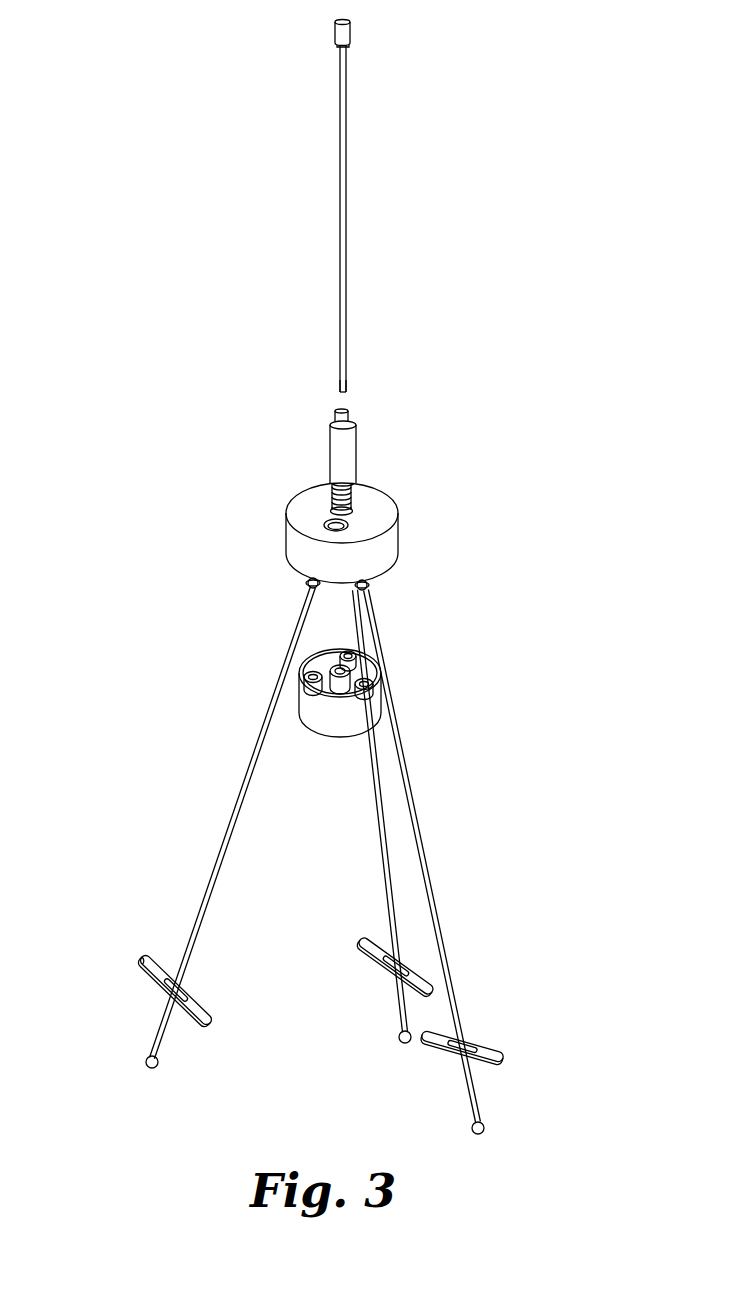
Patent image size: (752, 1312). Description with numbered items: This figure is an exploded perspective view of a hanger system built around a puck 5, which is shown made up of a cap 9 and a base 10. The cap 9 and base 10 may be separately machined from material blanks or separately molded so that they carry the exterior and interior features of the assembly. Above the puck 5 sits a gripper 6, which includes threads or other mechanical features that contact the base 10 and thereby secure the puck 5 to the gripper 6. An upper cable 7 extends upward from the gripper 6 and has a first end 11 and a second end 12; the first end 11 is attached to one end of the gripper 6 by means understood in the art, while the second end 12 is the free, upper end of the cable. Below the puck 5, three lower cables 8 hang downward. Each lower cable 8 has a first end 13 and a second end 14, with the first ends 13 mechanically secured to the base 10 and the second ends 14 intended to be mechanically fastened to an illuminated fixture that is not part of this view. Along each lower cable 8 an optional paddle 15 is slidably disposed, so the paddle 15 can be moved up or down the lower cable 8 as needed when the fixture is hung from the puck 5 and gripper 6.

The puck 5 is at (400, 530).
The gripper 6 is at (338, 445).
The upper cable 7 is at (346, 168).
The lower cable 8 is at (222, 848).
The cap 9 is at (290, 506).
The base 10 is at (335, 730).
The first end 11 is at (346, 392).
The second end 12 is at (335, 30).
The first end 13 is at (306, 582).
The second end 14 is at (146, 1060).
The paddle 15 is at (140, 958).